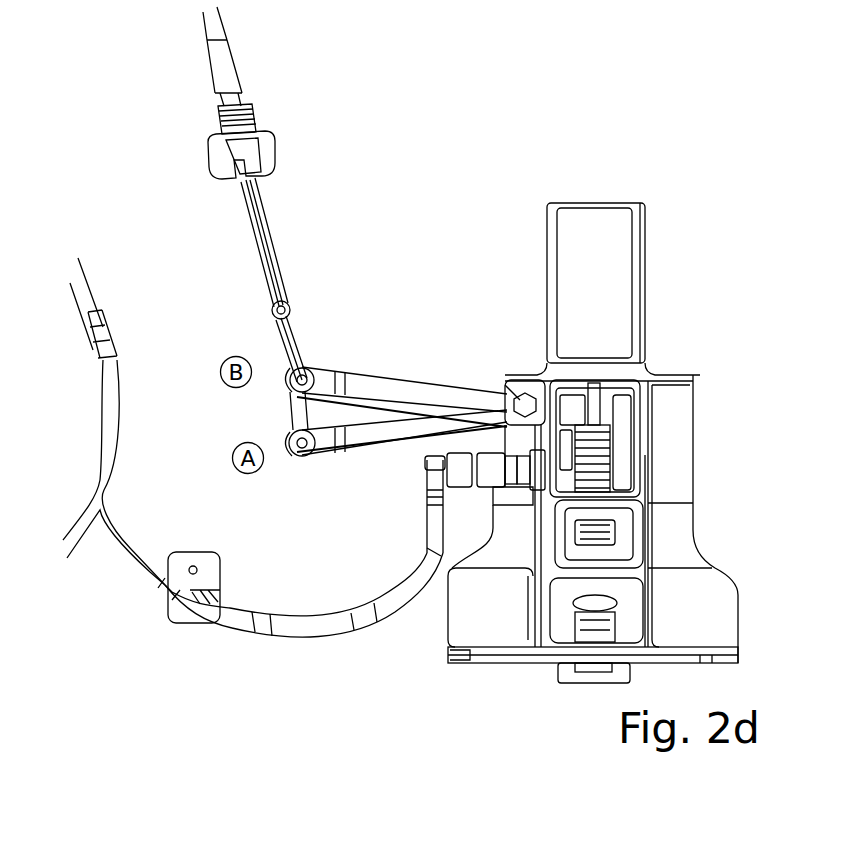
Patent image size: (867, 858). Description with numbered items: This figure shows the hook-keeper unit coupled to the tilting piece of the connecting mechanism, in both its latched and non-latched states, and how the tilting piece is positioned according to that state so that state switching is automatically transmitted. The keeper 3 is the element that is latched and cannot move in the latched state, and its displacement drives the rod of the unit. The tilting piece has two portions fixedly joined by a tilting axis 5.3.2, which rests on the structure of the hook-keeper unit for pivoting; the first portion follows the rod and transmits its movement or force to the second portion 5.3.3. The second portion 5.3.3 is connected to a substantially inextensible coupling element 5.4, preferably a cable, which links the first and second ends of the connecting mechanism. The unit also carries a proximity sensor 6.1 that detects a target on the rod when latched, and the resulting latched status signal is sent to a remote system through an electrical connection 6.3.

The substantially inextensible coupling element 5.4 is at (266, 237).
The tilting axis 5.3.2 is at (510, 388).
The second portion 5.3.3 is at (383, 431).
The proximity sensor 6.1 is at (494, 472).
The electrical connection 6.3 is at (228, 618).
The keeper 3 is at (580, 681).